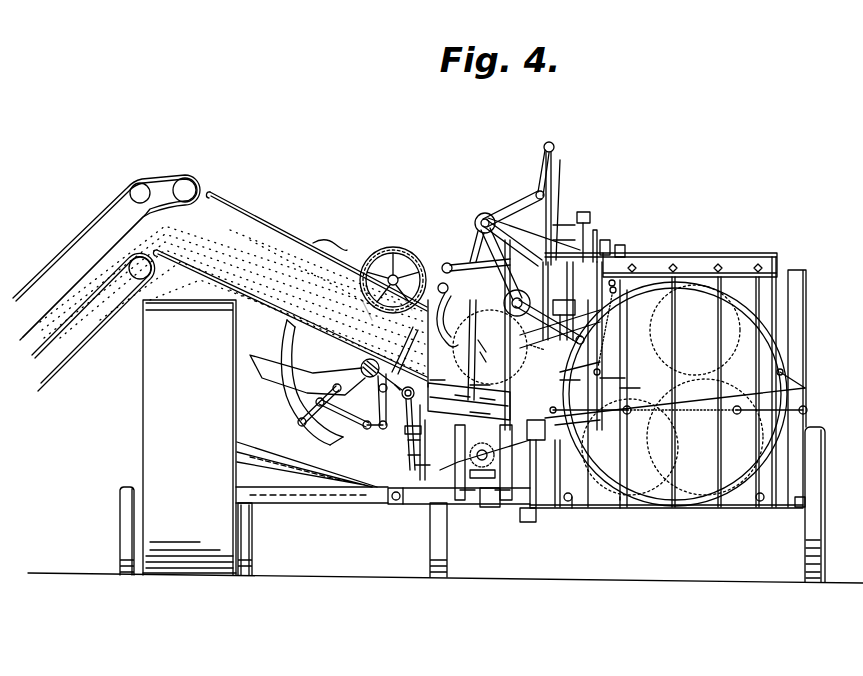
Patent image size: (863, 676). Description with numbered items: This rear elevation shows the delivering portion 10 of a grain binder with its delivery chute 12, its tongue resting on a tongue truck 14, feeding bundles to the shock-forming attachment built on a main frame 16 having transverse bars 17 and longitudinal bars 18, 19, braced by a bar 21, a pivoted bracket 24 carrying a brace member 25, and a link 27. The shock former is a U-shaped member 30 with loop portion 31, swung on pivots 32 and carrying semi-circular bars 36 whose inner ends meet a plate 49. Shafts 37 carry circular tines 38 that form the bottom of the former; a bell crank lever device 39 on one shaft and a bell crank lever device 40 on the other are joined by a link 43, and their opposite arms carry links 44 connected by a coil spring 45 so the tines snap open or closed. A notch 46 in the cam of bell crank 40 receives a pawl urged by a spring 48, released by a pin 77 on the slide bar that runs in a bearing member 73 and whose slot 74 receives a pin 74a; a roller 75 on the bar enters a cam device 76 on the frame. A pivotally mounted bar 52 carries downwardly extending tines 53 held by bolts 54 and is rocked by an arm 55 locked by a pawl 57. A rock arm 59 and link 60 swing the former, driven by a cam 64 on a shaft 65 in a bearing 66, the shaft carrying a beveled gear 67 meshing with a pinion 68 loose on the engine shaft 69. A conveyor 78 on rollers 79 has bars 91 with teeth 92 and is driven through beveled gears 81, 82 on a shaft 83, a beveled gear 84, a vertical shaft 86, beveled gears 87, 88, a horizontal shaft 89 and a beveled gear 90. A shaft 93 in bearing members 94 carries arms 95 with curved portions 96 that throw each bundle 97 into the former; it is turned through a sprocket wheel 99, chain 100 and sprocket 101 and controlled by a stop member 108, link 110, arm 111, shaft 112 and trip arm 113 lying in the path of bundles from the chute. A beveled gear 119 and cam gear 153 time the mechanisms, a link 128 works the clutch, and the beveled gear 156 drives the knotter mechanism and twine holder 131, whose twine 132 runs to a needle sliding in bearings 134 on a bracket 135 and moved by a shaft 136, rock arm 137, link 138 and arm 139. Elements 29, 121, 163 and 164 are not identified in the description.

The delivering portion of grain binder 10 is at (268, 199).
The delivery chute 12 is at (338, 289).
The tongue truck 14 is at (140, 525).
The main frame 16 is at (572, 510).
The transversely arranged bars 17 is at (620, 508).
The longitudinally arranged bar 18 is at (800, 508).
The longitudinally arranged bar 19 is at (540, 508).
The bar 21 is at (286, 446).
The pivoted bracket 24 is at (396, 504).
The brace member 25 is at (290, 466).
The link 27 is at (304, 498).
The ground wheel 29 is at (806, 551).
The U-shaped member 30 is at (560, 486).
The loop portion 31 is at (778, 318).
The pivots 32 is at (758, 508).
The semi-circular bars 36 is at (695, 330).
The shafts 37 is at (806, 388).
The circular tines or prongs 38 is at (596, 441).
The bell crank lever device 39 is at (783, 372).
The bell crank lever device 40 is at (575, 418).
The link 43 is at (641, 380).
The links 44 is at (750, 411).
The coil spring 45 is at (690, 416).
The notch 46 is at (603, 351).
The spring 48 is at (610, 330).
The plate 49 is at (563, 318).
The pivotally mounted bar 52 is at (700, 262).
The downwardly extending tines 53 is at (753, 350).
The bolts 54 is at (645, 262).
The rearwardly extending arm 55 is at (622, 250).
The pawl 57 is at (611, 242).
The rock arm 59 is at (489, 508).
The link 60 is at (561, 462).
The cam 64 is at (530, 523).
The shaft 65 is at (490, 455).
The bearing 66 is at (503, 482).
The beveled gear 67 is at (471, 482).
The pinion 68 is at (469, 461).
The engine shaft 69 is at (481, 469).
The bearing member 73 is at (648, 283).
The slot 74 is at (576, 380).
The pin 74a is at (636, 370).
The roller 75 is at (596, 232).
The cam device 76 is at (586, 228).
The pin 77 is at (605, 366).
The conveyor 78 is at (463, 393).
The roller 79 is at (437, 377).
The beveled gear 81 is at (403, 381).
The beveled gear 82 is at (403, 396).
The shaft 83 is at (405, 420).
The beveled gear 84 is at (480, 410).
The vertically arranged shaft 86 is at (392, 430).
The beveled gear 87 is at (408, 441).
The beveled gear 88 is at (412, 455).
The horizontally arranged shaft 89 is at (420, 466).
The beveled gear 90 is at (458, 463).
The bars 91 is at (486, 393).
The teeth 92 is at (469, 400).
The shaft 93 is at (460, 302).
The bearing members 94 is at (448, 262).
The arms 95 is at (478, 318).
The rearwardly extending and curved portions 96 is at (620, 325).
The bundle 97 is at (469, 347).
The sprocket wheel 99 is at (534, 234).
The chain 100 is at (487, 333).
The sprocket 101 is at (430, 470).
The stop member 108 is at (532, 329).
The link 110 is at (475, 224).
The arm 111 is at (408, 256).
The shaft 112 is at (370, 319).
The trip arm 113 is at (410, 314).
The beveled gear 119 is at (470, 360).
The link 121 is at (537, 355).
The link 128 is at (486, 378).
The knotter mechanism and twine holder 131 is at (535, 430).
The twine 132 is at (727, 313).
The bearings 134 is at (563, 233).
The bracket 135 is at (563, 215).
The shaft 136 is at (484, 213).
The rock arm 137 is at (522, 210).
The link 138 is at (553, 163).
The rotatively mounted arm 139 is at (512, 240).
The cam gear 153 is at (556, 200).
The beveled gear 156 is at (512, 461).
The frame bar 163 is at (574, 246).
The post 164 is at (582, 301).